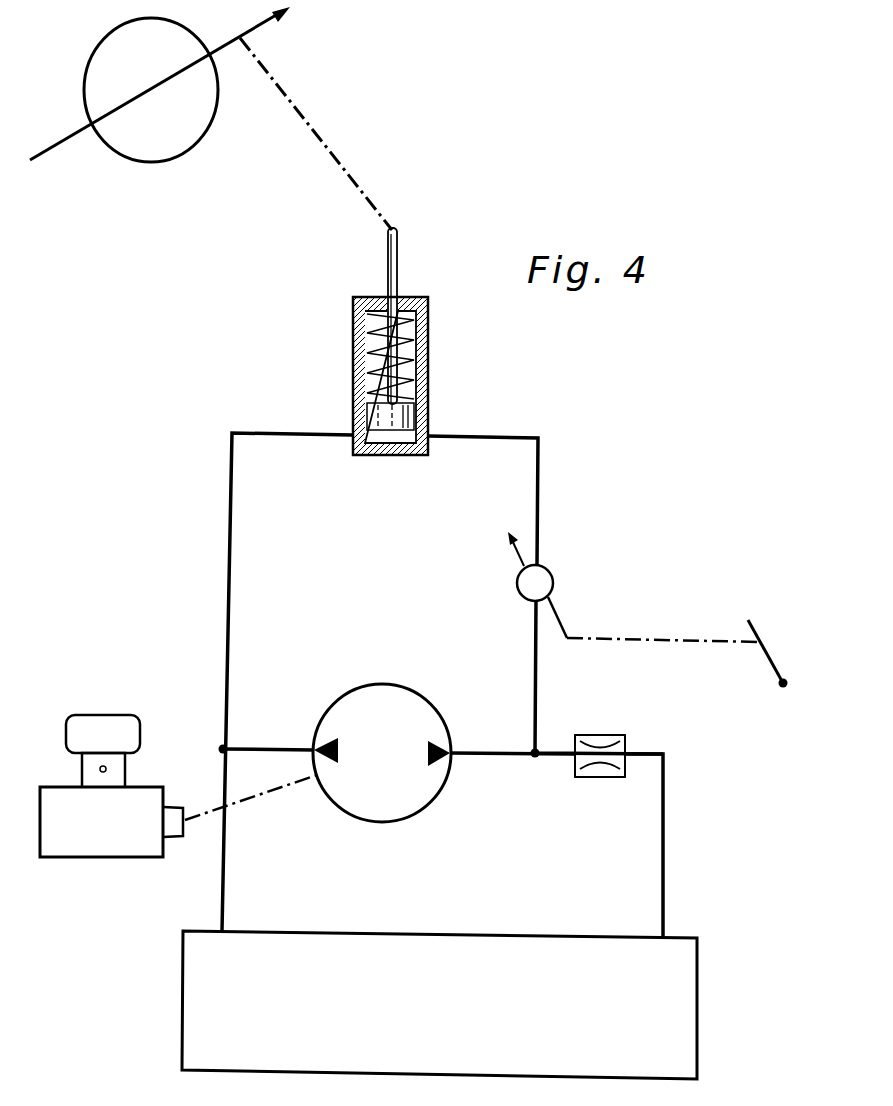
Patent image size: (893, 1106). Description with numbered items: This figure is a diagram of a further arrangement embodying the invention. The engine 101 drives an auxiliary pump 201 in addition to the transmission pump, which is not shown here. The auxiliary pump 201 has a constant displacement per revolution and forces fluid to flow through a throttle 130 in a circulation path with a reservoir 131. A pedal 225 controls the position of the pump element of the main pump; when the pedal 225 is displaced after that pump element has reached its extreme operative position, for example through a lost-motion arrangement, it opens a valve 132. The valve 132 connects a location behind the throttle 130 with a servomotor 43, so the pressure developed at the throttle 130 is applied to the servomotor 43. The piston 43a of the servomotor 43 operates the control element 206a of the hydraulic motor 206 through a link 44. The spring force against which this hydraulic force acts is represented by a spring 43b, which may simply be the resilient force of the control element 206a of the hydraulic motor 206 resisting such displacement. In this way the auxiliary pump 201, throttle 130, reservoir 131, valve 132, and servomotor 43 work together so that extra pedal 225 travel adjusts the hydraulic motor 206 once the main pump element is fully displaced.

The hydraulic motor 206 is at (116, 36).
The control element of the hydraulic motor 206a is at (47, 150).
The link 44 is at (310, 122).
The servomotor 43 is at (434, 385).
The piston 43a is at (398, 256).
The spring 43b is at (373, 345).
The valve 132 is at (516, 584).
The pedal 225 is at (757, 626).
The pump 201 is at (380, 684).
The engine 101 is at (92, 858).
The throttle 130 is at (598, 734).
The reservoir 131 is at (192, 1003).